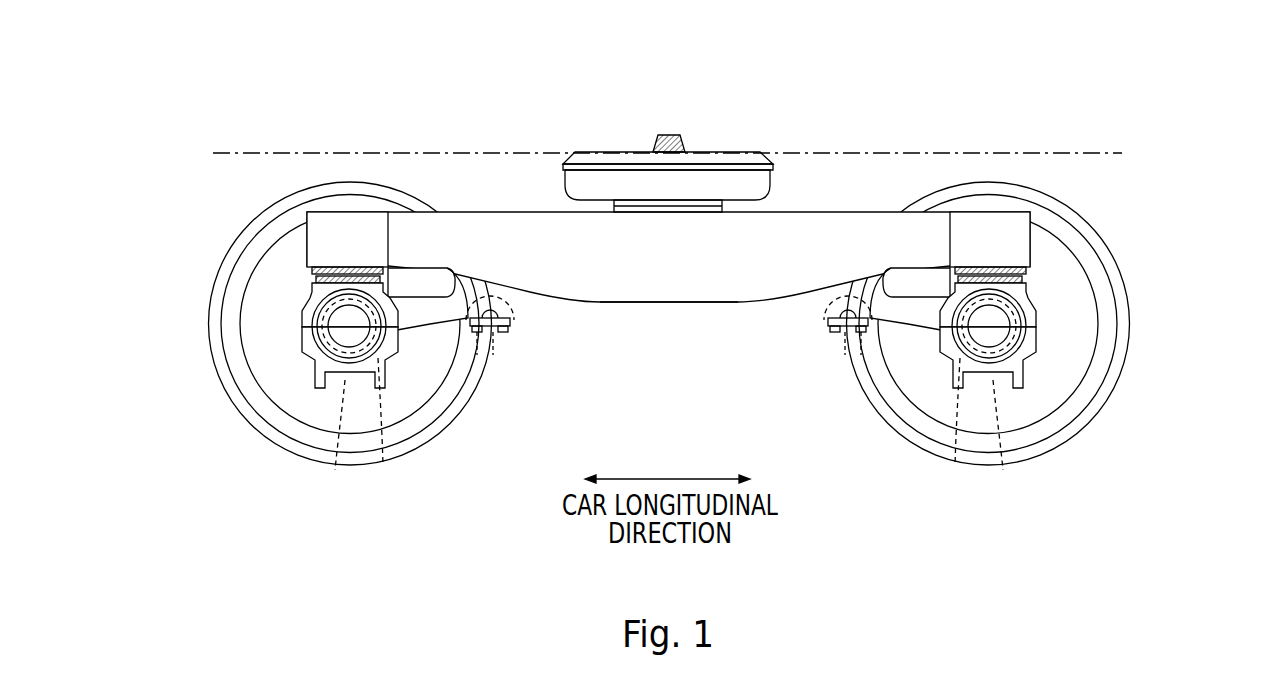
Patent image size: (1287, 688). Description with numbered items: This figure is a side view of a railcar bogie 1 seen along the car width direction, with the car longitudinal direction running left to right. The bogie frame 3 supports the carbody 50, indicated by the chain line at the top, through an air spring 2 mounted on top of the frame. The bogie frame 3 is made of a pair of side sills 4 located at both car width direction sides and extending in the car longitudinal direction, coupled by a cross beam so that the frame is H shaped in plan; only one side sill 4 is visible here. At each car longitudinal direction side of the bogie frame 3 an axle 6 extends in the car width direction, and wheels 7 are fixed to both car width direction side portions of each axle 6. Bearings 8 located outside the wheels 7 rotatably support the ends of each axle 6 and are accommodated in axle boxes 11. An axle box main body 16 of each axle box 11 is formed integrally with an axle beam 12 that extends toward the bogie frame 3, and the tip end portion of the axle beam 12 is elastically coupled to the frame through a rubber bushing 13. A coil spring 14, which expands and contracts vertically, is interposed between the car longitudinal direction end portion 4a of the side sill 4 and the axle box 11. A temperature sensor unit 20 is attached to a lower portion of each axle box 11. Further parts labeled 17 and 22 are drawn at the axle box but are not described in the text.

The railcar bogie 1 is at (287, 108).
The air spring 2 is at (738, 152).
The bogie frame 3 is at (663, 302).
The side sill 4 is at (738, 302).
The car longitudinal direction end portion of the side sill 4a is at (350, 212).
The axle 6 is at (299, 358).
The wheel 7 is at (253, 221).
The bearing 8 is at (384, 468).
The axle box 11 is at (112, 318).
The axle beam 12 is at (428, 300).
The rubber bushing 13 is at (520, 300).
The coil spring 14 is at (337, 270).
The axle box main body 16 is at (306, 312).
The lower axle box portion 17 is at (306, 352).
The temperature sensor unit 20 is at (352, 378).
The elastic body 22 is at (300, 428).
The carbody 50 is at (1087, 153).